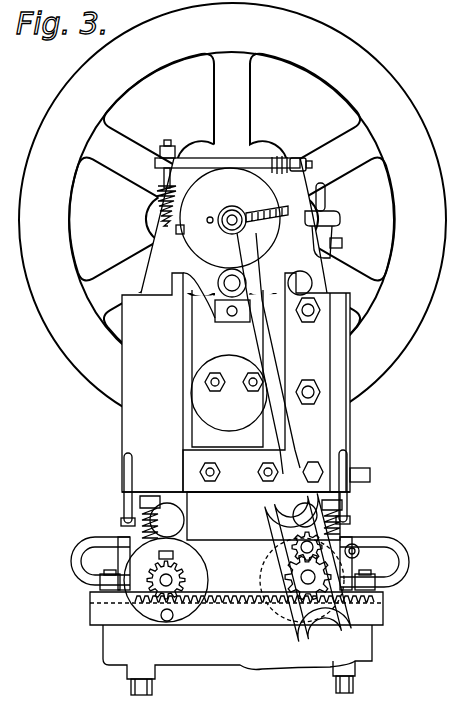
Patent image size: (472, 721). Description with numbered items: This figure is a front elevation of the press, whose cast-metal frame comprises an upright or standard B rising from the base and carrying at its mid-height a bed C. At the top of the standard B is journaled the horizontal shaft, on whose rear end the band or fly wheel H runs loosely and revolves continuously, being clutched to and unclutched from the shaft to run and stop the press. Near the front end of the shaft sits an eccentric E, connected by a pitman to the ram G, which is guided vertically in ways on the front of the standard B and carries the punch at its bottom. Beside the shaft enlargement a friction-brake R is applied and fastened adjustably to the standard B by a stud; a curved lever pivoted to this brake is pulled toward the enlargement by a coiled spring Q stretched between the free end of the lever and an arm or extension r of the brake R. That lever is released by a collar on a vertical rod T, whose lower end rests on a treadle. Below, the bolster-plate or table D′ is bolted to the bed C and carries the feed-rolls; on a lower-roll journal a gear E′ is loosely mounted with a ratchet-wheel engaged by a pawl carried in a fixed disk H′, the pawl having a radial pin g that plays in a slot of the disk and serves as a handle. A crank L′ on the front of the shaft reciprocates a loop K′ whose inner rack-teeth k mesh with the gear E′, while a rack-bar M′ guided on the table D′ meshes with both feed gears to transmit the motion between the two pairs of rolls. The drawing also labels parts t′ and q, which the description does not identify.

The band or fly wheel H is at (385, 76).
The upright or standard B is at (233, 227).
The arm or extension of the friction-brake r is at (158, 163).
The friction-brake R is at (197, 160).
The coiled spring Q is at (156, 212).
The crank L′ is at (232, 218).
The vertical rod T is at (326, 194).
The nut t′ is at (336, 223).
The ram G is at (229, 385).
The rack-teeth k is at (256, 346).
The loop K′ is at (268, 507).
The spring q is at (154, 540).
The disk or wheel H′ is at (166, 580).
The eccentric E is at (171, 575).
The radial pin g is at (167, 622).
The gear E′ is at (287, 575).
The rack-bar M′ is at (254, 587).
The bolster-plate or table D′ is at (236, 608).
The bed C is at (237, 660).